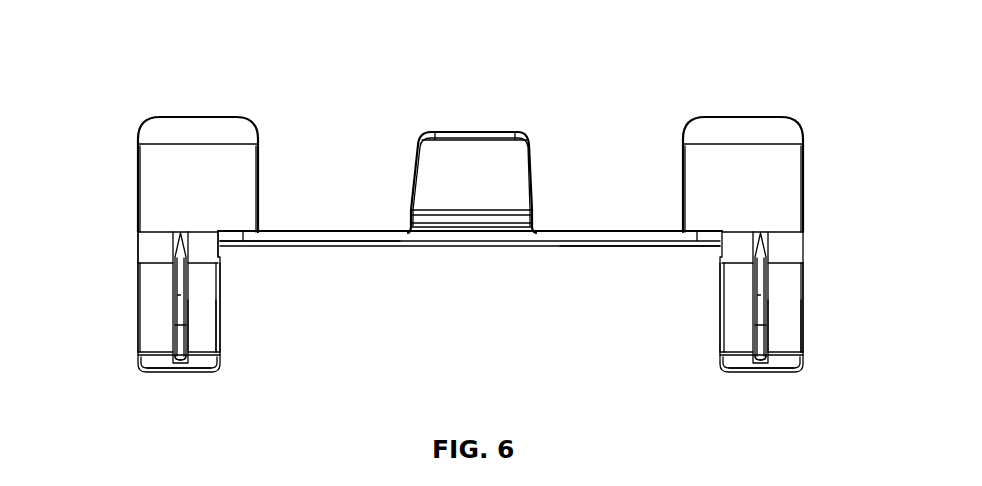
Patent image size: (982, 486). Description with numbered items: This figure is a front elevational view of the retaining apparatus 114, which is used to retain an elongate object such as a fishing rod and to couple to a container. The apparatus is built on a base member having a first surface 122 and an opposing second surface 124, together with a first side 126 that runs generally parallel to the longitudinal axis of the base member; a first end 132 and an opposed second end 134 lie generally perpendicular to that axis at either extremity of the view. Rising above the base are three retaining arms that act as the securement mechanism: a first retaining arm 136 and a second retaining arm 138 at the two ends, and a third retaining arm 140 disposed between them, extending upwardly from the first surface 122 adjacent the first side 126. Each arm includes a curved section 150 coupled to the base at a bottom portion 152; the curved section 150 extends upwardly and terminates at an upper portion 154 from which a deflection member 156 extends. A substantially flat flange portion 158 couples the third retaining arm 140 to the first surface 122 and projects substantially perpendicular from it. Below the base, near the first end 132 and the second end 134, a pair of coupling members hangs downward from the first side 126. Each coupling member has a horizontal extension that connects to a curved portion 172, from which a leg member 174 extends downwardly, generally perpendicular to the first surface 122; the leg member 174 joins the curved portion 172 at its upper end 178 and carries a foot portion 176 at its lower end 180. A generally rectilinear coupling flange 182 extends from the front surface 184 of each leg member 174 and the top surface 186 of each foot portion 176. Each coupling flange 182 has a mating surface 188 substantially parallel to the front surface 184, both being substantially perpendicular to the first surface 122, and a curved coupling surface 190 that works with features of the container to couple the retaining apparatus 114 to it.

The retaining apparatus 114 is at (126, 58).
The first surface 122 is at (339, 229).
The second surface 124 is at (589, 249).
The first side 126 is at (366, 244).
The first end 132 is at (809, 247).
The second end 134 is at (132, 247).
The first retaining arm 136 is at (706, 165).
The second retaining arm 138 is at (236, 165).
The third retaining arm 140 is at (510, 195).
The curved section 150 is at (143, 192).
The bottom portion 152 is at (143, 222).
The upper portion 154 is at (143, 163).
The deflection member 156 is at (196, 130).
The flange portion 158 is at (515, 222).
The curved portion 172 is at (148, 258).
The leg member 174 is at (206, 300).
The foot portion 176 is at (143, 375).
The upper end 178 is at (206, 271).
The lower end 180 is at (206, 356).
The coupling flange 182 is at (178, 347).
The front surface 184 is at (206, 328).
The top surface 186 is at (196, 368).
The mating surface 188 is at (180, 358).
The curved coupling surface 190 is at (178, 314).